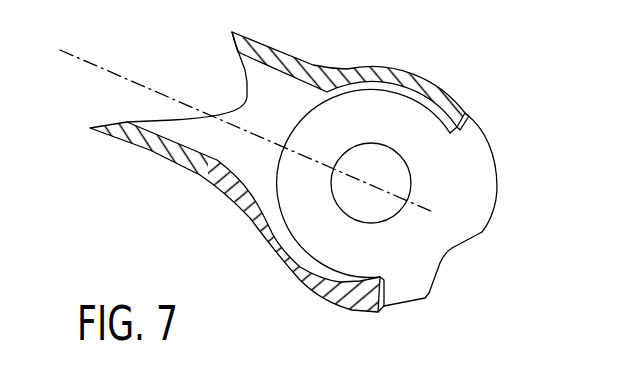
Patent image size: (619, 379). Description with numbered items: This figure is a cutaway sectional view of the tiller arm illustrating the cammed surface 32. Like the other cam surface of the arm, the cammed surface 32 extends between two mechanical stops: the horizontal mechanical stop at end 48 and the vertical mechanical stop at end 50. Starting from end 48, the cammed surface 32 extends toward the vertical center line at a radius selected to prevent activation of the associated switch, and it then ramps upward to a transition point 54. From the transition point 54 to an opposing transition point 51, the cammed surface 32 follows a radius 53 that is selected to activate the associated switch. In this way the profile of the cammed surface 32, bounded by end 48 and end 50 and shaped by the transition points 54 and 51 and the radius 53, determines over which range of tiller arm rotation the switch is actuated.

The cammed surface 32 is at (498, 142).
The end (horizontal mechanical stop) 48 is at (343, 326).
The end (vertical mechanical stop) 50 is at (438, 66).
The opposing transition point 51 is at (457, 100).
The radius 53 is at (498, 201).
The transition point 54 is at (482, 232).